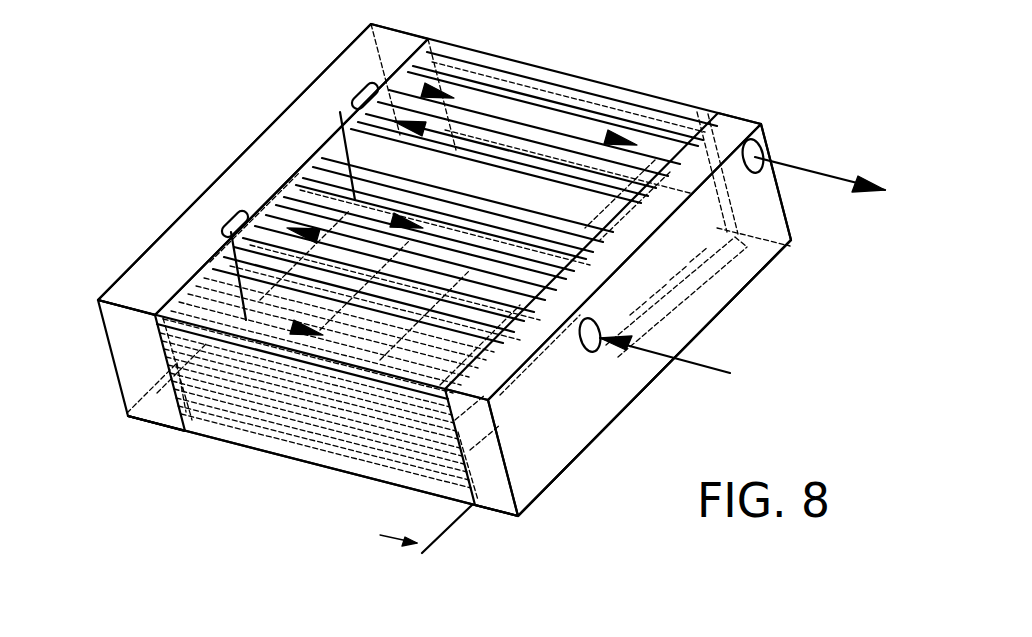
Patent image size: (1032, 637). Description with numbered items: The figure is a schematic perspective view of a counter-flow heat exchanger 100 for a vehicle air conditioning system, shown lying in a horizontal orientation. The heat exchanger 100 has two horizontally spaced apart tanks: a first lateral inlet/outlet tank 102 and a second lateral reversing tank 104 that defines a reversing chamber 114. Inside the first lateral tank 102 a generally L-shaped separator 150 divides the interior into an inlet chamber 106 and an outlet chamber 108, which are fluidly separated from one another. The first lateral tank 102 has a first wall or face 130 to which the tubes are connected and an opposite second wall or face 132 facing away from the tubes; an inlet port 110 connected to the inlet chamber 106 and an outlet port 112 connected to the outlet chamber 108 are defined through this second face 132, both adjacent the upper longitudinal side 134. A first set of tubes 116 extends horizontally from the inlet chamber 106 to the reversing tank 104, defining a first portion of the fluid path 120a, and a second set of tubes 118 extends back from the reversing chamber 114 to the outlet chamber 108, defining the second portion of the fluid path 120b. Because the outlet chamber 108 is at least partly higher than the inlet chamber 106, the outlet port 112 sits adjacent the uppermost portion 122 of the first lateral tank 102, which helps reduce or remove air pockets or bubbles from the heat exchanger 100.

The counter-flow heat exchanger 100 is at (243, 468).
The first lateral inlet/outlet tank 102 is at (514, 522).
The second lateral reversing tank 104 is at (232, 152).
The inlet chamber 106 is at (492, 403).
The outlet chamber 108 is at (722, 288).
The inlet port 110 is at (600, 345).
The outlet port 112 is at (763, 132).
The reversing chamber 114 is at (305, 108).
The first set of tubes 116 is at (162, 292).
The second set of tubes 118 is at (197, 434).
The fluid path (first portion) 120a is at (215, 213).
The fluid path (second portion) 120b is at (360, 80).
The uppermost portion of first lateral tank 122 is at (746, 130).
The first wall or face 130 is at (474, 520).
The second wall or face 132 is at (682, 323).
The upper longitudinal side 134 is at (698, 130).
The separator 150 is at (690, 245).